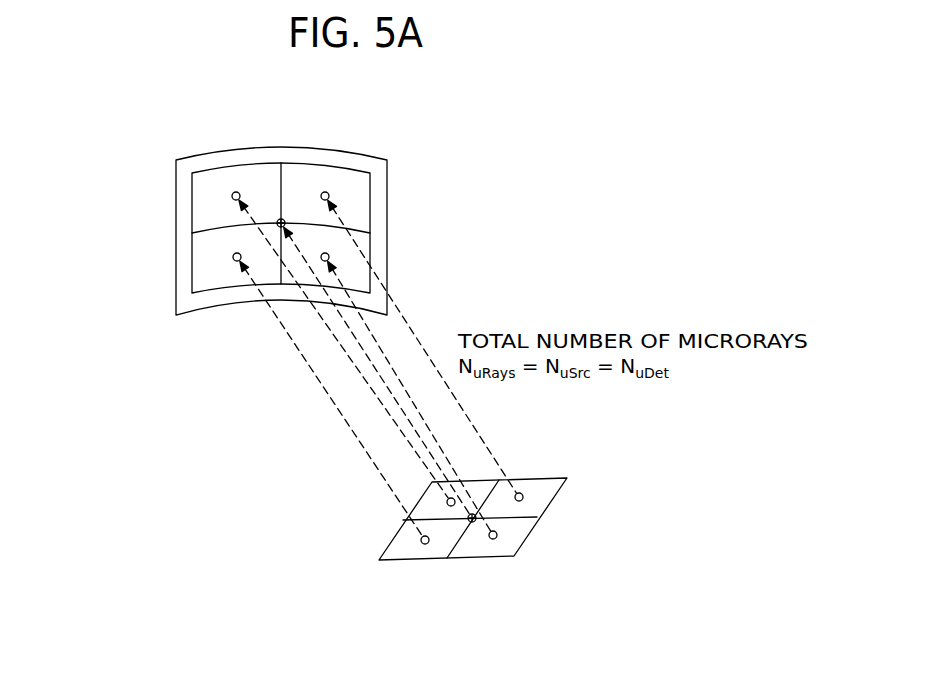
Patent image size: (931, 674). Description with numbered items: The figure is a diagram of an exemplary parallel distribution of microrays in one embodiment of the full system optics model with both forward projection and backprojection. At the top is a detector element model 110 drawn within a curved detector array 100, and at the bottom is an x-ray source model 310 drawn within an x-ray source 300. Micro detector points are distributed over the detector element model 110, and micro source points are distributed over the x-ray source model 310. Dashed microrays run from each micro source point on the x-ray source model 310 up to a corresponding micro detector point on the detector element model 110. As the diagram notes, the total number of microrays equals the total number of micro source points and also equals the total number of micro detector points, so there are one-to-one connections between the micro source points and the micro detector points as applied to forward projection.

The detector array 100 is at (207, 150).
The detector element model 110 is at (383, 142).
The x-ray source 300 is at (497, 555).
The x-ray source model 310 is at (527, 568).